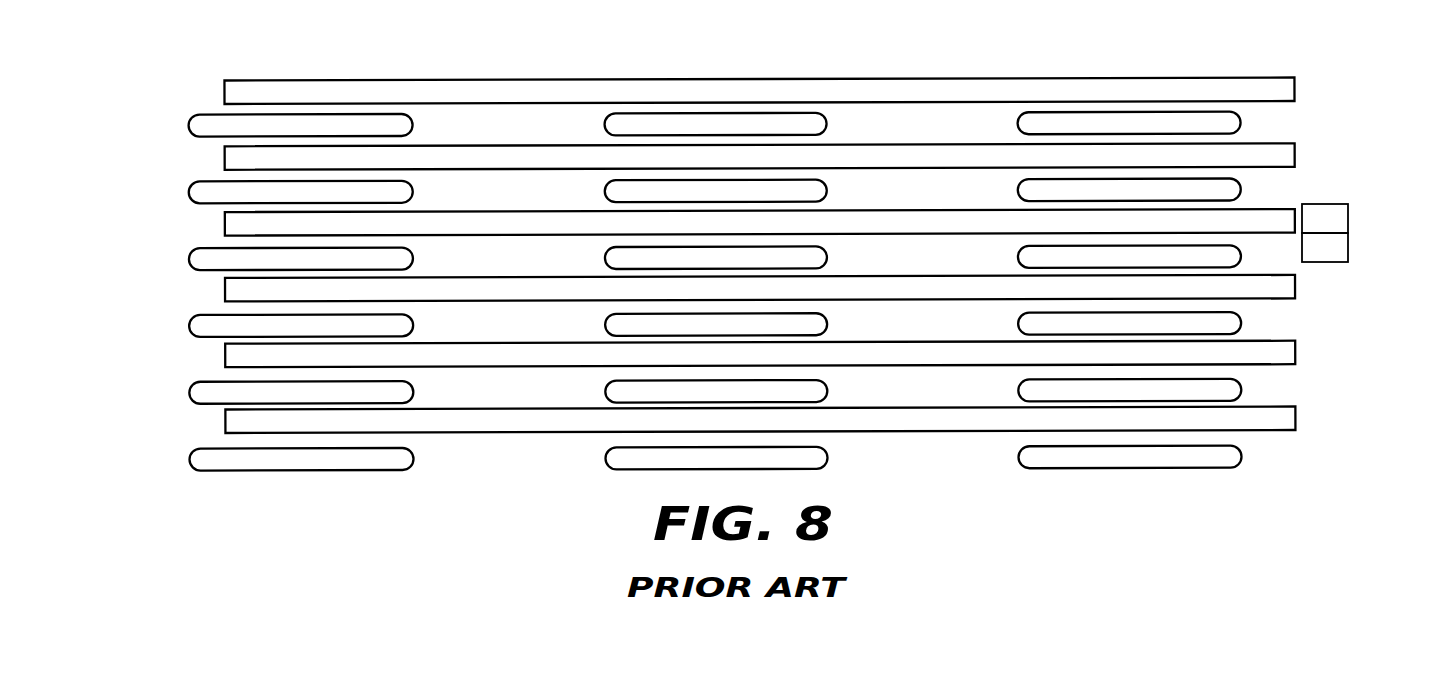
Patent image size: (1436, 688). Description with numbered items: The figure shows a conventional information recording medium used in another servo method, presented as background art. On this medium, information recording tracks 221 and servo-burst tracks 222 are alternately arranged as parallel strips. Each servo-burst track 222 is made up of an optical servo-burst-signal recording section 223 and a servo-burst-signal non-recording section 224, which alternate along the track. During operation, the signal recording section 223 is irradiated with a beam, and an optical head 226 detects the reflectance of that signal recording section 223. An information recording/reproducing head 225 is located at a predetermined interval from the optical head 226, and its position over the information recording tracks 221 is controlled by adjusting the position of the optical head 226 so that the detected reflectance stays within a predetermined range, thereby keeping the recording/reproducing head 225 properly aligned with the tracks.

The information recording track 221 is at (1300, 83).
The servo-burst track 222 is at (1272, 125).
The optical servo-burst-signal recording section 223 is at (1256, 190).
The servo-burst-signal non-recording section 224 is at (936, 194).
The information recording/reproducing head 225 is at (1348, 219).
The optical head 226 is at (1348, 255).